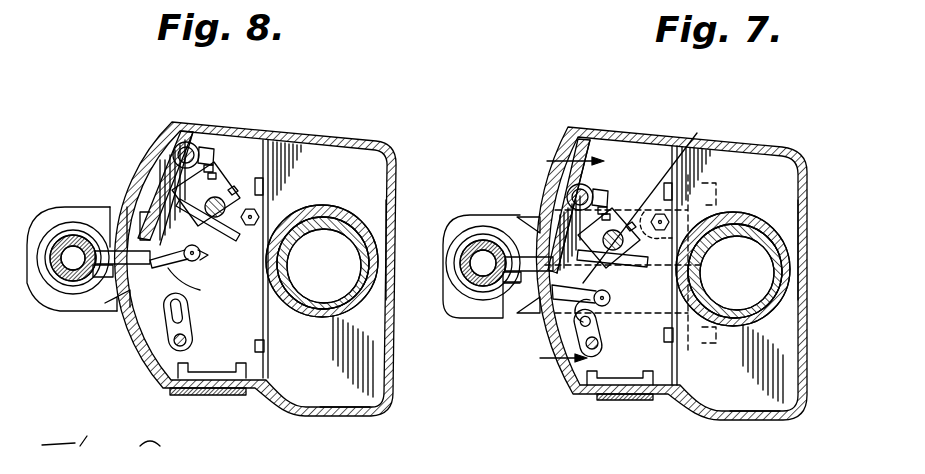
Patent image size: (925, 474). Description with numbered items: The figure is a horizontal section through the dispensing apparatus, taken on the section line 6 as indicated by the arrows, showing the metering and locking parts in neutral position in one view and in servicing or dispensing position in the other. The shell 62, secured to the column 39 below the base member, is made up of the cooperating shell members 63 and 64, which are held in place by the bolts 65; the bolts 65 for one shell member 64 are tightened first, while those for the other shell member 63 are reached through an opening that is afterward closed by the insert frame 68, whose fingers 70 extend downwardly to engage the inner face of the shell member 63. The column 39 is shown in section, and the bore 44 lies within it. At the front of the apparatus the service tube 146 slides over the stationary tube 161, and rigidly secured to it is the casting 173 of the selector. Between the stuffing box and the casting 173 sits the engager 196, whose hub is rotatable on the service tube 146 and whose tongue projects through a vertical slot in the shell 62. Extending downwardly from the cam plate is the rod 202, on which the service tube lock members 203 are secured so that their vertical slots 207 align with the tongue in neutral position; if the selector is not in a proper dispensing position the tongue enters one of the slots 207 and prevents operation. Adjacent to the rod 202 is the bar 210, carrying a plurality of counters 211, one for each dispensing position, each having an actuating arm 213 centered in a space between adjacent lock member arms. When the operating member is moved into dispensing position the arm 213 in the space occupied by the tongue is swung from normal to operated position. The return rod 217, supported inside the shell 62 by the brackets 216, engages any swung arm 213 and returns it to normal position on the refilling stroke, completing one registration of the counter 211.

In FIG. 7, the section line 6 is at (580, 260).
In FIG. 8, the column 39 is at (317, 307).
In FIG. 7, the column 39 is at (740, 327).
In FIG. 8, the bearing hub 44 is at (348, 220).
In FIG. 7, the bearing hub 44 is at (770, 227).
In FIG. 8, the shell 62 is at (350, 145).
In FIG. 7, the shell 62 is at (785, 153).
In FIG. 8, the shell member 63 is at (373, 385).
In FIG. 7, the shell member 63 is at (787, 347).
In FIG. 8, the shell member 64 is at (373, 207).
In FIG. 7, the shell member 64 is at (793, 177).
In FIG. 8, the bolts 65 is at (250, 220).
In FIG. 7, the bolts 65 is at (664, 338).
In FIG. 8, the insert frame 68 is at (212, 392).
In FIG. 8, the fingers 70 is at (187, 368).
In FIG. 8, the service tube 146 is at (70, 283).
In FIG. 7, the service tube 146 is at (483, 285).
In FIG. 8, the stationary tube 161 is at (80, 282).
In FIG. 7, the stationary tube 161 is at (488, 285).
In FIG. 8, the casting 173 is at (65, 210).
In FIG. 7, the casting 173 is at (463, 310).
In FIG. 8, the engager 196 is at (110, 248).
In FIG. 7, the engager 196 is at (478, 243).
In FIG. 8, the rod 202 is at (198, 152).
In FIG. 7, the rod 202 is at (583, 192).
In FIG. 8, the service tube lock members 203 is at (157, 170).
In FIG. 7, the service tube lock members 203 is at (543, 213).
In FIG. 8, the vertical slot 207 is at (181, 128).
In FIG. 7, the vertical slot 207 is at (547, 210).
In FIG. 8, the bar 210 is at (245, 190).
In FIG. 7, the bar 210 is at (658, 199).
In FIG. 8, the counters 211 is at (200, 263).
In FIG. 7, the counters 211 is at (615, 292).
In FIG. 8, the actuating arms 213 is at (199, 287).
In FIG. 7, the actuating arms 213 is at (656, 237).
In FIG. 8, the brackets 216 is at (167, 332).
In FIG. 7, the brackets 216 is at (583, 333).
In FIG. 8, the return rod 217 is at (177, 350).
In FIG. 7, the return rod 217 is at (590, 353).